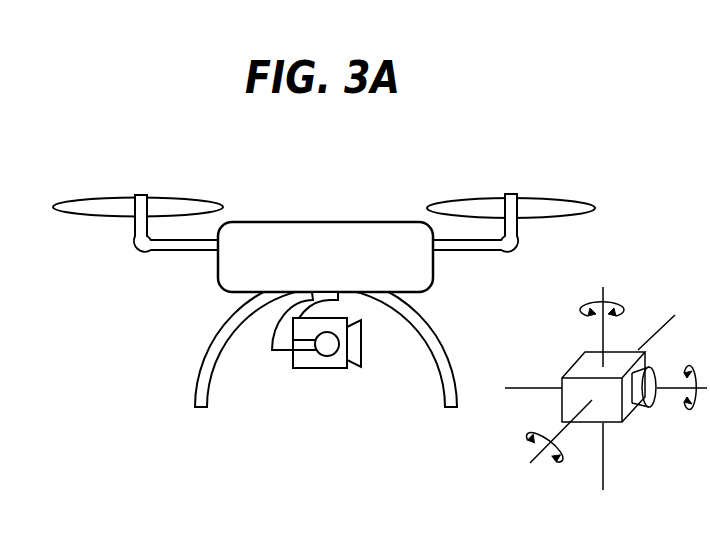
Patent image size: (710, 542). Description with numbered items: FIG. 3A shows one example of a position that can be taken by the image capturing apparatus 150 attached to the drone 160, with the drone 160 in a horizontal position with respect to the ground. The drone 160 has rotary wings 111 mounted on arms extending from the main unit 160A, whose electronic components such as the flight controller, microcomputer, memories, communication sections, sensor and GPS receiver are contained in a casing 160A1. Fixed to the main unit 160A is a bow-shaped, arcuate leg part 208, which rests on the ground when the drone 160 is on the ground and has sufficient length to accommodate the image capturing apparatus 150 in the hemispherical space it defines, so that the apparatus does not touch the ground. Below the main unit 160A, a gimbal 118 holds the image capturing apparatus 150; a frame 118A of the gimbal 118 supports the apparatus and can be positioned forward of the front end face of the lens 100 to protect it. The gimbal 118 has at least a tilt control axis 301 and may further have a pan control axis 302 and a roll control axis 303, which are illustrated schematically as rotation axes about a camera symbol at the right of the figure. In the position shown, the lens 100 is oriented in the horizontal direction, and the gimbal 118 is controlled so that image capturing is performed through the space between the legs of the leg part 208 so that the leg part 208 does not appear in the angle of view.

The lens 100 is at (362, 357).
The rotary wings 111 is at (550, 197).
The gimbal 118 is at (286, 356).
The frame 118A is at (272, 342).
The image capturing apparatus 150 is at (278, 376).
The drone 160 is at (324, 201).
The main unit 160A is at (323, 238).
The casing 160A1 is at (253, 222).
The leg part 208 is at (198, 372).
The tilt control axis 301 is at (568, 458).
The pan control axis 302 is at (590, 303).
The roll control axis 303 is at (687, 407).